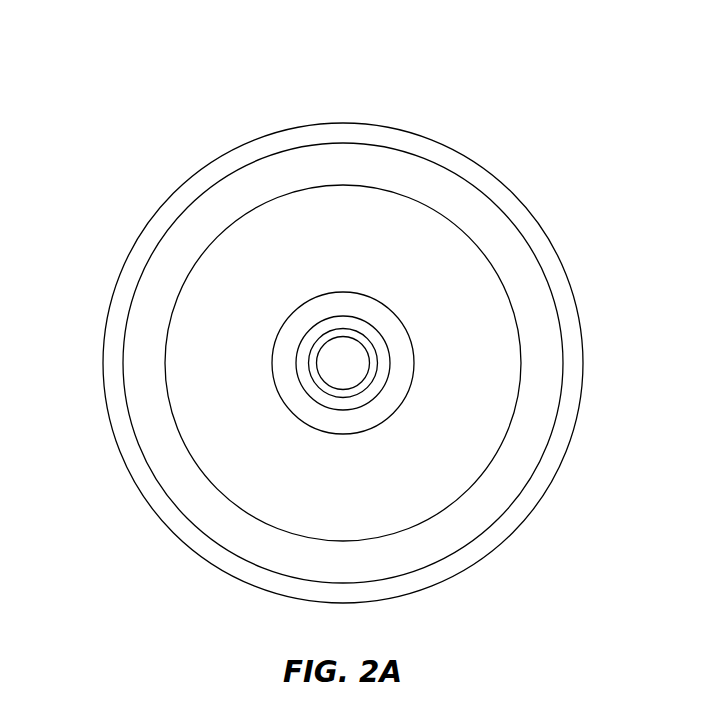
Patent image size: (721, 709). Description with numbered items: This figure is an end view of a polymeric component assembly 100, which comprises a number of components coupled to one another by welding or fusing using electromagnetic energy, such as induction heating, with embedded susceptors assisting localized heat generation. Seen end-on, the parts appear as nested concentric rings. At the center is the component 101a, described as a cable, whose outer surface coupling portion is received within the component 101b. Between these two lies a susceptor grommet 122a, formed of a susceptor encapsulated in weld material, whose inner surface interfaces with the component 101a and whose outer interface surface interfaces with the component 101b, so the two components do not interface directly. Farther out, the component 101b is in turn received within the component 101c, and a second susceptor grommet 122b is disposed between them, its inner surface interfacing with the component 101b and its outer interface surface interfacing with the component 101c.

The component assembly 100 is at (205, 73).
The component 101c is at (168, 199).
The component 101b is at (190, 343).
The component 101a is at (319, 390).
The susceptor grommet 122b is at (485, 225).
The susceptor grommet 122a is at (383, 358).